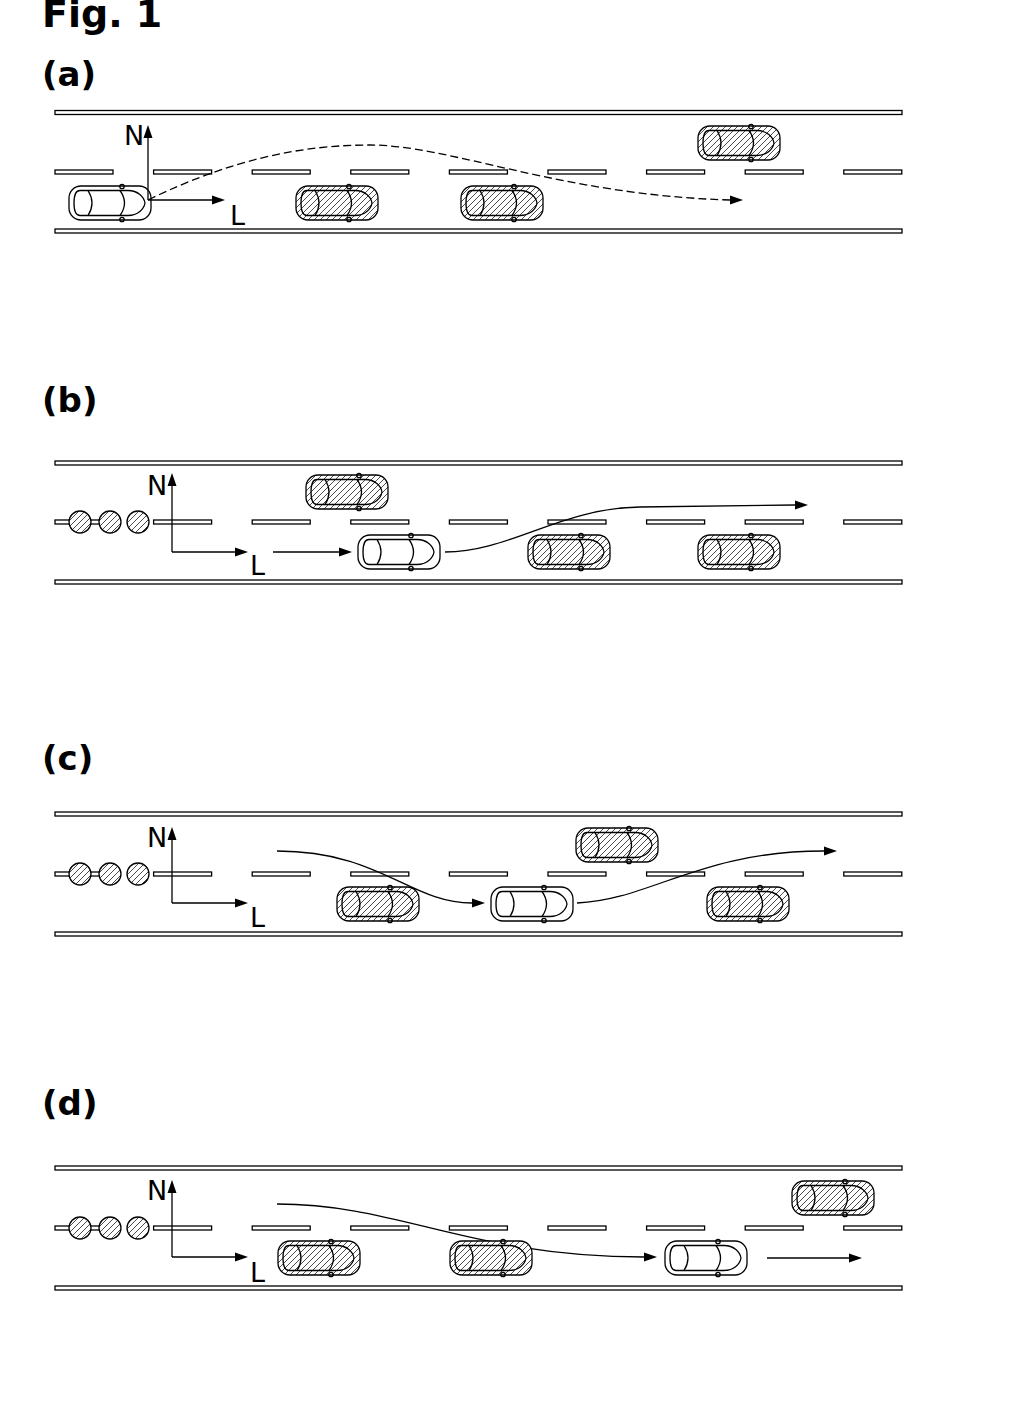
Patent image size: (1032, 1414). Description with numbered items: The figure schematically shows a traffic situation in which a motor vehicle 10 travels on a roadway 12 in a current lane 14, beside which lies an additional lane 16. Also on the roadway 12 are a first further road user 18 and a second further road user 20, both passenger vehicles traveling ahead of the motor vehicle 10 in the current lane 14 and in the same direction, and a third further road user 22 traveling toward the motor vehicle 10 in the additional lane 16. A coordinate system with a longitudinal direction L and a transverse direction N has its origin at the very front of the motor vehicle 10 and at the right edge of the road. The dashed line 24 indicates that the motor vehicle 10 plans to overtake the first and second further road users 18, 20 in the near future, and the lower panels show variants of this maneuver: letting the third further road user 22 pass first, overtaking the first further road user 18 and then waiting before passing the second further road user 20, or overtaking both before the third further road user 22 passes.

The motor vehicle 10 is at (103, 205).
The roadway 12 is at (292, 98).
The current lane 14 is at (877, 203).
The additional lane 16 is at (875, 145).
The first further road user 18 is at (328, 208).
The second further road user 20 is at (493, 208).
The third further road user 22 is at (743, 130).
The dashed line 24 is at (388, 148).